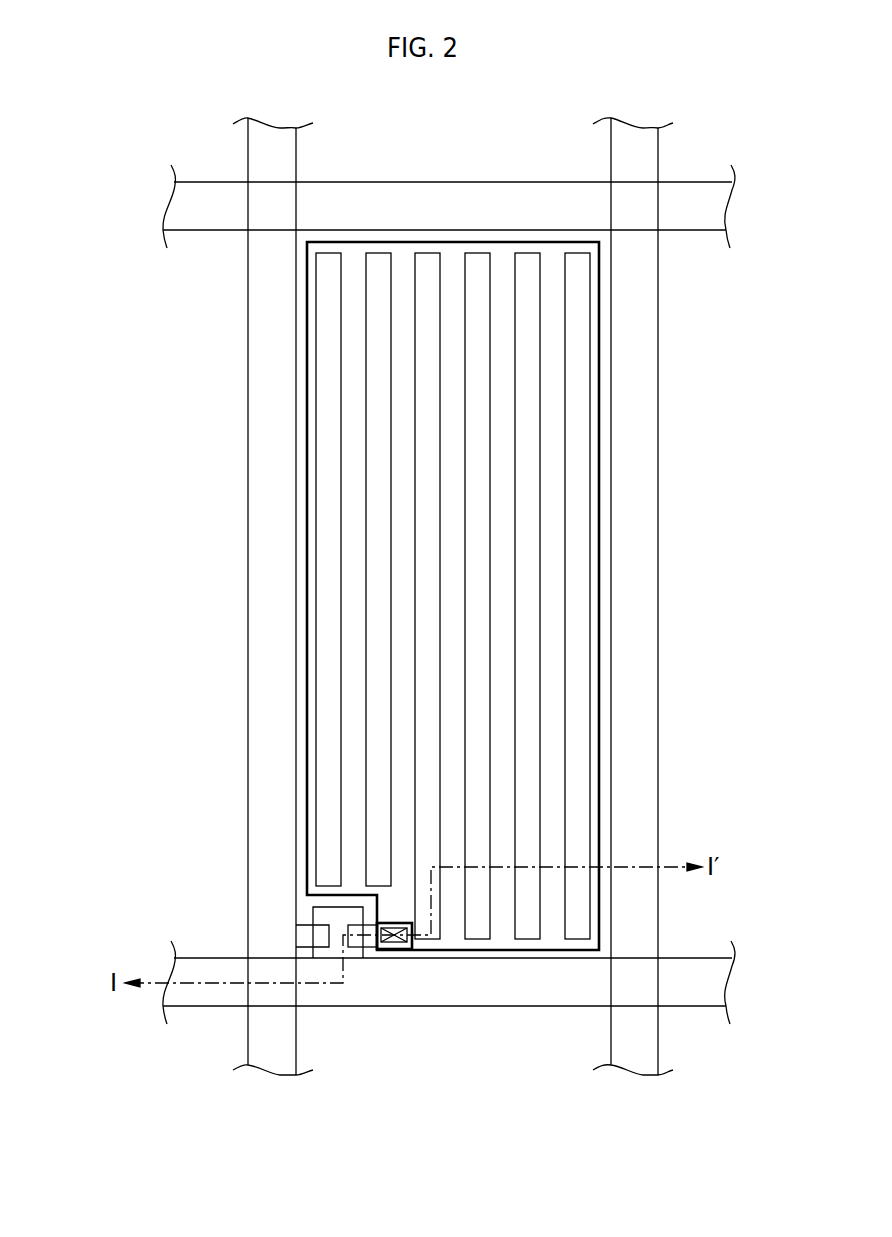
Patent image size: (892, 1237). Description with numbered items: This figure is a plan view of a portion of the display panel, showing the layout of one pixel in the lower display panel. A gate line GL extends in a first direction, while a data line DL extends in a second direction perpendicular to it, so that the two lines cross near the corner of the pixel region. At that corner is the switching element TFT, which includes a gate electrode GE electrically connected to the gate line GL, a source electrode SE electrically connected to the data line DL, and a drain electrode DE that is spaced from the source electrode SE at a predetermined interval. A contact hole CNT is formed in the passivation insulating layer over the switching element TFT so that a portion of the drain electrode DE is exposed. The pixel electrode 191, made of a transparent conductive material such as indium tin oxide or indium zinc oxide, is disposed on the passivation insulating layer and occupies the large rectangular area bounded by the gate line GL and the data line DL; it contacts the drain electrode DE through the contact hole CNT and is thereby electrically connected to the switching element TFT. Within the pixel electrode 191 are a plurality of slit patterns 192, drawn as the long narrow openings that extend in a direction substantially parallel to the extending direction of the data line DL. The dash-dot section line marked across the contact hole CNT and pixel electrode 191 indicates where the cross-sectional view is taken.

The pixel electrode 191 is at (600, 373).
The slit patterns 192 is at (565, 428).
The data line DL is at (653, 777).
The gate line GL is at (685, 967).
The switching element TFT is at (361, 999).
The source electrode SE is at (307, 937).
The gate electrode GE is at (335, 937).
The drain electrode DE is at (357, 938).
The contact hole CNT is at (396, 938).